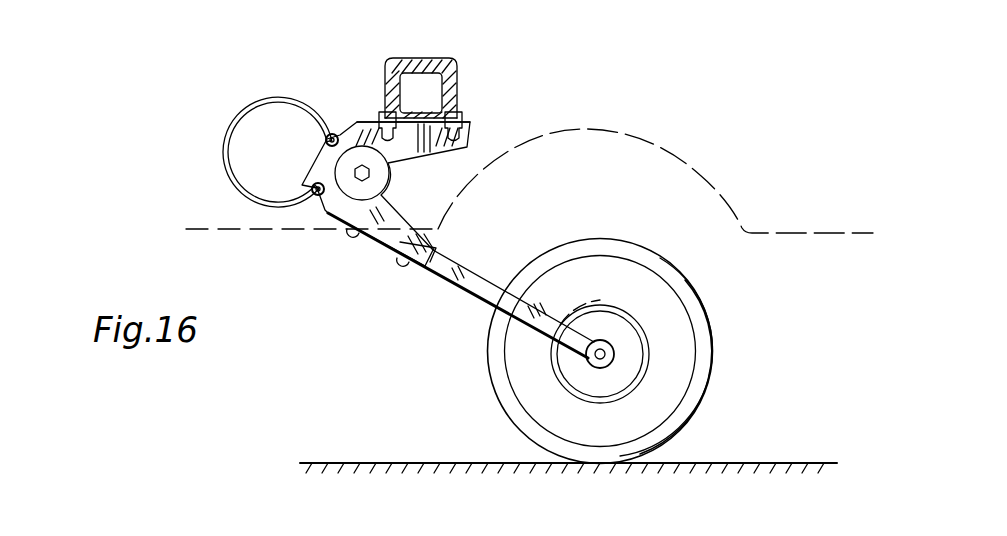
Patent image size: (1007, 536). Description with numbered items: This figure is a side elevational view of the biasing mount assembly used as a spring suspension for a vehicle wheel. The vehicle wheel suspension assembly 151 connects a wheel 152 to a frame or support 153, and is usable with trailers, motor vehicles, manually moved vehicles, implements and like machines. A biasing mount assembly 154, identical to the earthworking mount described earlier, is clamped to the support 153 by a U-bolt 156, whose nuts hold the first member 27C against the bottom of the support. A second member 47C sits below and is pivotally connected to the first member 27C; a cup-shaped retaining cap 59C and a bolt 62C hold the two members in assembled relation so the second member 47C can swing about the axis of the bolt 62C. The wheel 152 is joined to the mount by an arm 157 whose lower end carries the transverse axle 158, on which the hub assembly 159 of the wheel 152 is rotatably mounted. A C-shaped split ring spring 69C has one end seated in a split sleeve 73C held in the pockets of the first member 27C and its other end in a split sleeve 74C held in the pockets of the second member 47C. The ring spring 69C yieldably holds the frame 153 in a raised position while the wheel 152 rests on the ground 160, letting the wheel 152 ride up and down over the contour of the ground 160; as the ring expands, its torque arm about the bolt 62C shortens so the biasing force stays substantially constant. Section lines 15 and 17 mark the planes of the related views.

The section line 15 is at (505, 0).
The section line 17 is at (758, 30).
The vehicle wheel suspension assembly 151 is at (160, 219).
The wheel 152 is at (634, 351).
The frame or support 153 is at (438, 81).
The biasing mount assembly 154 is at (222, 149).
The U-bolt 156 is at (421, 60).
The arm 157 is at (460, 285).
The transverse axle 158 is at (612, 354).
The hub assembly 159 is at (618, 320).
The ground 160 is at (416, 462).
The first member 27C is at (470, 127).
The second member 47C is at (412, 219).
The retaining cap 59C is at (380, 186).
The bolt 62C is at (369, 173).
The split ring spring 69C is at (226, 168).
The split sleeve 73C is at (338, 134).
The split sleeve 74C is at (280, 220).